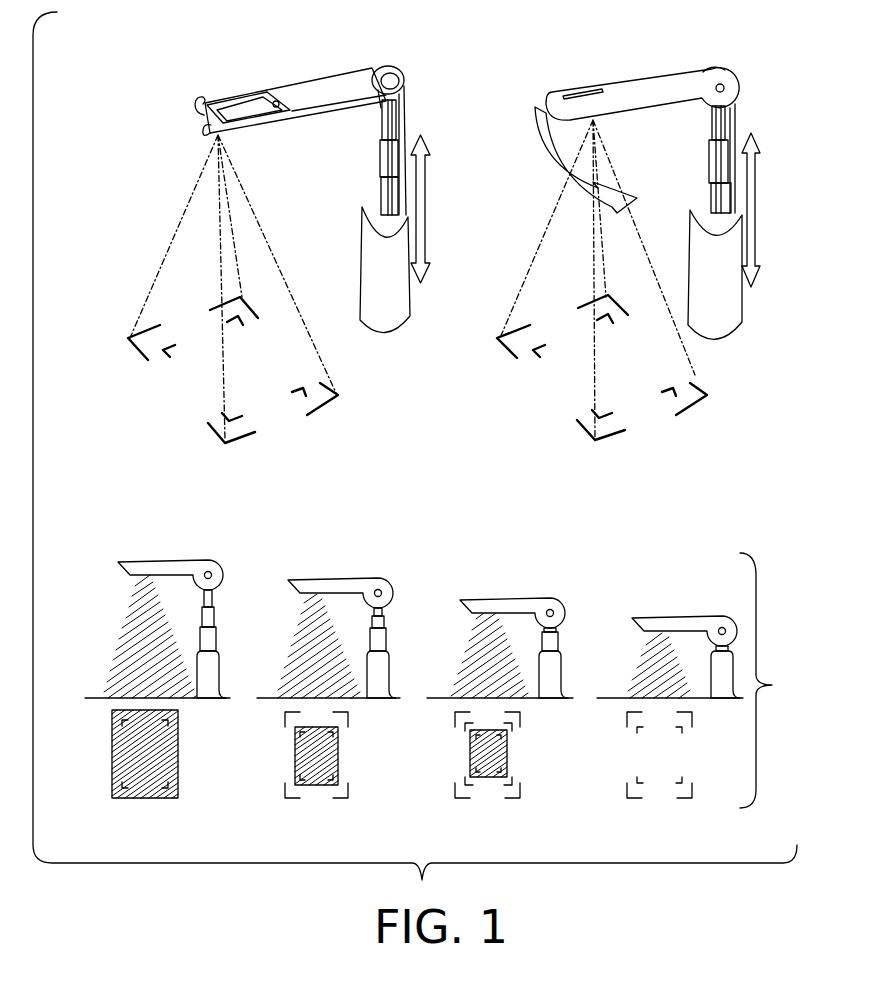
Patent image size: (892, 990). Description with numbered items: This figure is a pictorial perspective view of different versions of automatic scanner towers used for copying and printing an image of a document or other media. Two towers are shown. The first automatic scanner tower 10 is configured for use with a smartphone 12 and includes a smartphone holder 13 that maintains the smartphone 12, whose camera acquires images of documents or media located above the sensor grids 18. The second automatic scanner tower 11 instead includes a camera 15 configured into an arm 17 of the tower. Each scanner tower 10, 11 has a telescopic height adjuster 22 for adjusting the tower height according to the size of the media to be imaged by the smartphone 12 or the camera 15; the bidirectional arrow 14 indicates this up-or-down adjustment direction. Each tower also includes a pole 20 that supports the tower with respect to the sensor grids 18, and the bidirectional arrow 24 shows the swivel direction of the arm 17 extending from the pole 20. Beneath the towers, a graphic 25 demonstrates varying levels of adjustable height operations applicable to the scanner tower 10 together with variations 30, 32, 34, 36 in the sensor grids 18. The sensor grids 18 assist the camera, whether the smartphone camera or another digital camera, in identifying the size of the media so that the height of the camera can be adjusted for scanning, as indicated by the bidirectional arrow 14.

The automatic scanner tower 10 is at (414, 364).
The automatic scanner tower 11 is at (619, 231).
The smartphone 12 is at (264, 104).
The smartphone holder 13 is at (192, 105).
The bidirectional arrow 14 is at (428, 213).
The camera 15 is at (581, 88).
The arm 17 is at (668, 67).
The sensor grids 18 is at (290, 422).
The pole 20 is at (392, 343).
The telescopic height adjuster 22 is at (364, 176).
The bidirectional arrow 24 is at (542, 160).
The graphic 25 is at (770, 680).
The variation in the sensor grids 30 is at (100, 757).
The variation in the sensor grids 32 is at (283, 757).
The variation in the sensor grids 34 is at (452, 757).
The variation in the sensor grids 36 is at (622, 757).